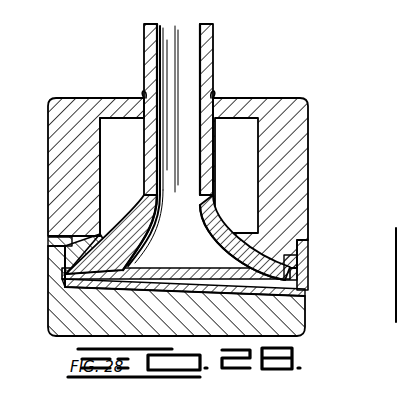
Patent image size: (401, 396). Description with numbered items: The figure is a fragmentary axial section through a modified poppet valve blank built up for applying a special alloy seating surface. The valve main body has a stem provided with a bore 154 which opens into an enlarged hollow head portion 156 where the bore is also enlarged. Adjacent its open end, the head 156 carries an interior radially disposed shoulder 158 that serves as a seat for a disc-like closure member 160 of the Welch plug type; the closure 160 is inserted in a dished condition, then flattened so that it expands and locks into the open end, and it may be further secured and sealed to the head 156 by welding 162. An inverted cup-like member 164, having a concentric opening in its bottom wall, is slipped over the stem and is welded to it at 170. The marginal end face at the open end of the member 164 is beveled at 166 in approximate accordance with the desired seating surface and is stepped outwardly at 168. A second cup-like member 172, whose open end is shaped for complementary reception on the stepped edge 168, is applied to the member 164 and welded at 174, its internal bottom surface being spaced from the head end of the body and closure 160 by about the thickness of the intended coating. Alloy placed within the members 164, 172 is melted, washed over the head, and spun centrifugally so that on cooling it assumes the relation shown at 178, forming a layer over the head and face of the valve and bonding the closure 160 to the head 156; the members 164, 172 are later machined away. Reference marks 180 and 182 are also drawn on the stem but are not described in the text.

The bore 154 is at (190, 78).
The enlarged hollow head portion 156 is at (225, 240).
The radially disposed shoulder 158 is at (235, 268).
The disc-like closure member 160 is at (152, 268).
The welding 162 is at (110, 282).
The inverted cup-like member 164 is at (300, 157).
The beveled marginal end face 166 is at (70, 240).
The stepped edge 168 is at (64, 258).
The weld 170 is at (145, 97).
The second cup-like member 172 is at (300, 310).
The weld 174 is at (306, 243).
The alloy layer 178 is at (283, 262).
The hollow stem 180 is at (215, 42).
The stem bore 182 is at (205, 61).